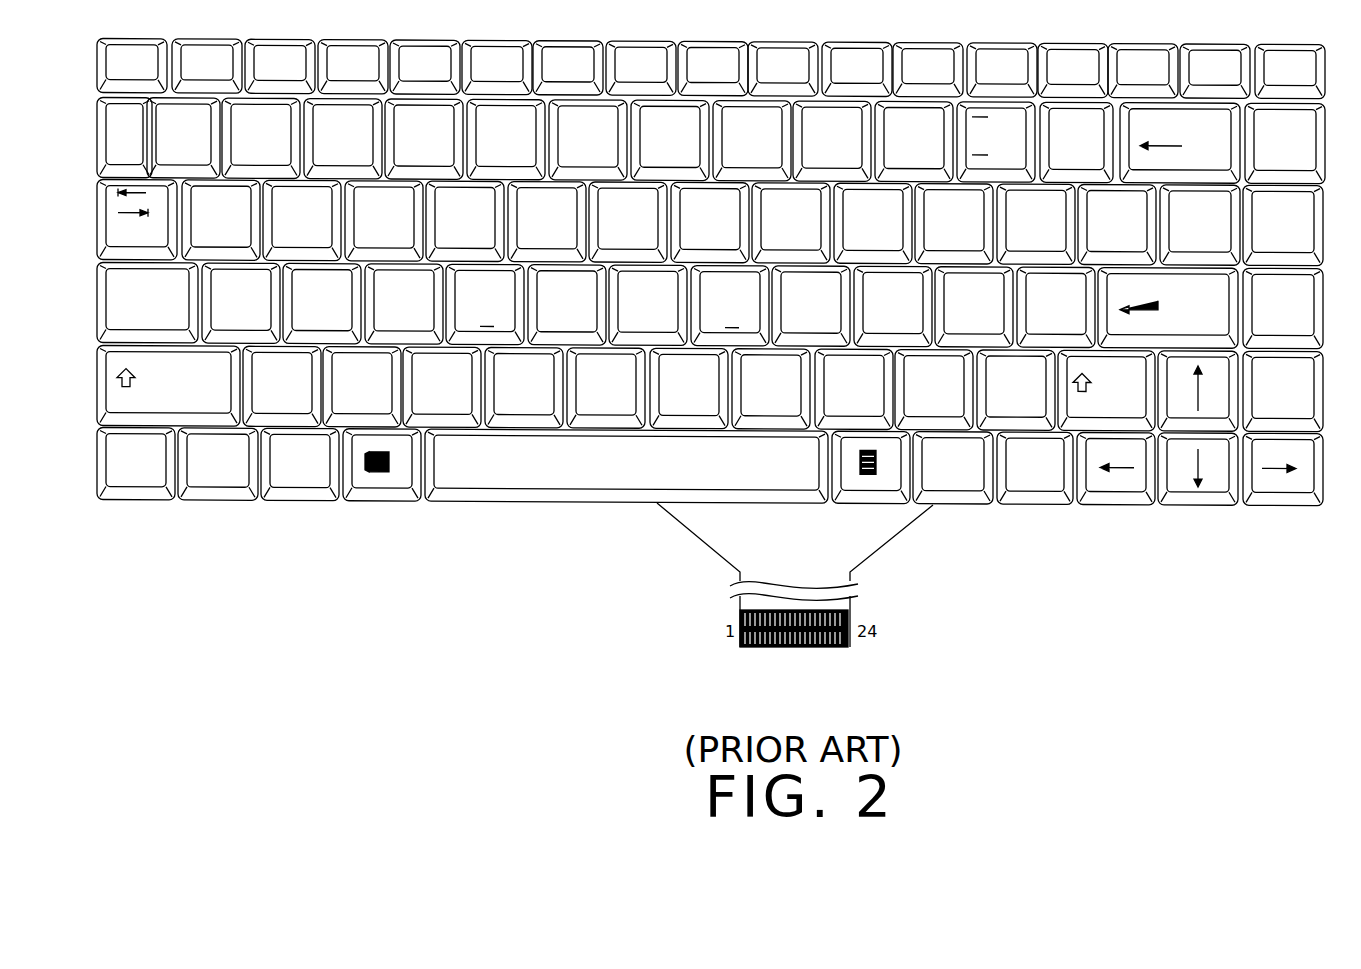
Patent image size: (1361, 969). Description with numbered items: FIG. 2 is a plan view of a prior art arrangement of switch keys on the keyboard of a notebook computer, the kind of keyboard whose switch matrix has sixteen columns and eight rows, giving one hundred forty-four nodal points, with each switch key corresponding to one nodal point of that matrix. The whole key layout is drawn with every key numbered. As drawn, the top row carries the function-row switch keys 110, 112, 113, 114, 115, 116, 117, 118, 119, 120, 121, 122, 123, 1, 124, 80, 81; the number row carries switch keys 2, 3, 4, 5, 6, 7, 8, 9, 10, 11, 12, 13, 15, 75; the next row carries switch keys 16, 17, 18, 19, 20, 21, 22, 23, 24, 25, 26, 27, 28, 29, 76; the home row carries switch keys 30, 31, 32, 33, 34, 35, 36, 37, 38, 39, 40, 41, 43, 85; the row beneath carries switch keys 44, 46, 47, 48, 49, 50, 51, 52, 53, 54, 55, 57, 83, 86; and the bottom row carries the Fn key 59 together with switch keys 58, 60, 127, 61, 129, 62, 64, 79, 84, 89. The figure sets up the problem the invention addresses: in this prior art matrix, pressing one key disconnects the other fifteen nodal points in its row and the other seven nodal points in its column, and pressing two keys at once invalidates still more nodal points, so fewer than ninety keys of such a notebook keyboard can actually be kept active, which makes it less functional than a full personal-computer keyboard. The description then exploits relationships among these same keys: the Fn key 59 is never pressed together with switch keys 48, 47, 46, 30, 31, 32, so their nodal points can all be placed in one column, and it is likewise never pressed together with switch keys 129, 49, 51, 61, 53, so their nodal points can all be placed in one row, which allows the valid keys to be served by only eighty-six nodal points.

The tilde key 1 is at (1073, 60).
The 1 key 2 is at (183, 138).
The 2 key 3 is at (261, 138).
The 3 key 4 is at (343, 139).
The 4 key 5 is at (424, 139).
The 5 key 6 is at (506, 139).
The 6 key 7 is at (588, 140).
The 7 key 8 is at (670, 140).
The 8 key 9 is at (752, 141).
The 9 key 10 is at (832, 141).
The 0 key 11 is at (914, 141).
The minus key 12 is at (996, 142).
The equals key 13 is at (1076, 142).
The backspace key 15 is at (1180, 143).
The tab key 16 is at (120, 219).
The Q key 17 is at (221, 220).
The W key 18 is at (302, 220).
The E key 19 is at (384, 221).
The R key 20 is at (465, 221).
The T key 21 is at (547, 222).
The Y key 22 is at (628, 222).
The U key 23 is at (710, 222).
The I key 24 is at (791, 223).
The O key 25 is at (873, 223).
The P key 26 is at (954, 224).
The left bracket key 27 is at (1036, 224).
The right bracket key 28 is at (1117, 224).
The backslash key 29 is at (1200, 225).
The switch key 30 is at (130, 302).
The switch key 31 is at (241, 303).
The switch key 32 is at (322, 303).
The D key 33 is at (404, 304).
The F key 34 is at (485, 304).
The G key 35 is at (567, 305).
The H key 36 is at (648, 305).
The J key 37 is at (730, 305).
The K key 38 is at (811, 306).
The L key 39 is at (893, 306).
The semicolon key 40 is at (974, 307).
The apostrophe key 41 is at (1056, 307).
The enter key 43 is at (1168, 308).
The left shift key 44 is at (151, 385).
The switch key 46 is at (282, 386).
The switch key 47 is at (362, 387).
The switch key 48 is at (442, 387).
The switch key 49 is at (524, 387).
The B key 50 is at (606, 388).
The switch key 51 is at (689, 388).
The M key 52 is at (771, 389).
The switch key 53 is at (854, 389).
The period key 54 is at (934, 390).
The slash key 55 is at (1016, 390).
The right shift key 57 is at (1106, 390).
The left control key 58 is at (218, 475).
The Fn key 59 is at (136, 474).
The left alt key 60 is at (300, 475).
The switch key 61 is at (626, 477).
The right alt key 62 is at (953, 479).
The right control key 64 is at (1035, 479).
The insert key 75 is at (1301, 143).
The delete key 76 is at (1300, 225).
The left arrow key 79 is at (1116, 479).
The home/pause key 80 is at (1215, 61).
The end/break key 81 is at (1290, 61).
The up arrow key 83 is at (1198, 391).
The down arrow key 84 is at (1198, 480).
The page up key 85 is at (1300, 308).
The page down key 86 is at (1300, 391).
The right arrow key 89 is at (1300, 469).
The escape key 110 is at (132, 55).
The F1 key 112 is at (207, 56).
The F2 key 113 is at (280, 56).
The F3 key 114 is at (353, 57).
The F4 key 115 is at (425, 57).
The F5 key 116 is at (497, 57).
The F6 key 117 is at (568, 58).
The F7 key 118 is at (641, 58).
The F8 key 119 is at (713, 58).
The F9/NumLk key 120 is at (783, 59).
The F10/ScrLk key 121 is at (857, 59).
The F11 key 122 is at (928, 60).
The F12 key 123 is at (1002, 60).
The print screen key 124 is at (1143, 61).
The windows key 127 is at (382, 476).
The switch key 129 is at (871, 478).